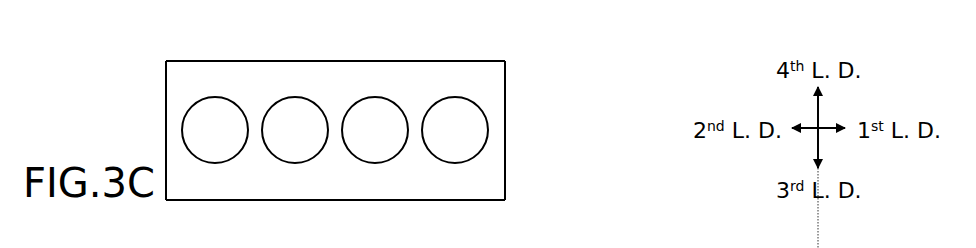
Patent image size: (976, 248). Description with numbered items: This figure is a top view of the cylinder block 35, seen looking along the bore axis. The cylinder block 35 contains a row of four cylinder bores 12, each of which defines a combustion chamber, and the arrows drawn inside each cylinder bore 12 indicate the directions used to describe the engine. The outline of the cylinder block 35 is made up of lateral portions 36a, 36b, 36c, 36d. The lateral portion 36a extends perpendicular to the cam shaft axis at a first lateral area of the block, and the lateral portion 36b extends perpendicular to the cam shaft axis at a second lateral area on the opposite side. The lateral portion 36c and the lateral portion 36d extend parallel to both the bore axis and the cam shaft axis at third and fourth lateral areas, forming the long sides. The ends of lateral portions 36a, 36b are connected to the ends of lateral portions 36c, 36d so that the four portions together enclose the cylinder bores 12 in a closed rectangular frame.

The cylinder bore 12 is at (487, 131).
The cylinder block 35 is at (258, 60).
The lateral portion 36a is at (505, 131).
The lateral portion 36b is at (166, 131).
The lateral portion 36c is at (355, 196).
The lateral portion 36d is at (340, 70).